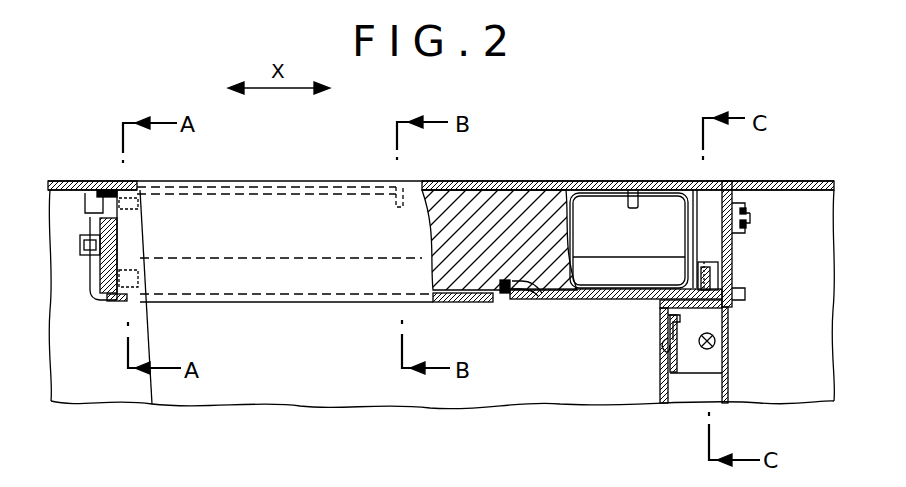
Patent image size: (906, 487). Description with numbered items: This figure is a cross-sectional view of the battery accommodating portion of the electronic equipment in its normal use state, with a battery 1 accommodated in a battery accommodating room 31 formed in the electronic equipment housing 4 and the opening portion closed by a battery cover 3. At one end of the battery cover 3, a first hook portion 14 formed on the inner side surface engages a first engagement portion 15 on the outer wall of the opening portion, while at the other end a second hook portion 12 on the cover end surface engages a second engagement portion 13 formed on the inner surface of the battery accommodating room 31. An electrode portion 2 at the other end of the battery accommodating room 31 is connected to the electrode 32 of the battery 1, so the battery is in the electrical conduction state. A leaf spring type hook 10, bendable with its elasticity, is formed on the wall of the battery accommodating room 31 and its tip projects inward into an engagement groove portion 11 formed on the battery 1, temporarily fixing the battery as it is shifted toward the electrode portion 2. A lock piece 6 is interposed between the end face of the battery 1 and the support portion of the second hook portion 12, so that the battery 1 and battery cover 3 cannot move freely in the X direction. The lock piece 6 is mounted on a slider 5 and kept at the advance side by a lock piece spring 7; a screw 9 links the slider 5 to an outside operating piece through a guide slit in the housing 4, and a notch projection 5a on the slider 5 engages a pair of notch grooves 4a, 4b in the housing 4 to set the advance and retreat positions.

The battery 1 is at (589, 210).
The electrode portion 2 is at (108, 300).
The battery cover 3 is at (452, 189).
The electronic equipment housing 4 is at (795, 181).
The notch groove 4a is at (666, 362).
The notch groove 4b is at (657, 327).
The slider 5 is at (688, 368).
The notch projection 5a is at (661, 342).
The lock piece 6 is at (735, 266).
The lock piece spring 7 is at (738, 292).
The screw 9 is at (728, 342).
The leaf spring type hook 10 is at (503, 300).
The engagement groove portion 11 is at (530, 297).
The second hook portion 12 is at (752, 226).
The second engagement portion 13 is at (752, 210).
The first hook portion 14 is at (117, 183).
The first engagement portion 15 is at (140, 200).
The battery accommodating room 31 is at (696, 190).
The electrode 32 is at (140, 270).